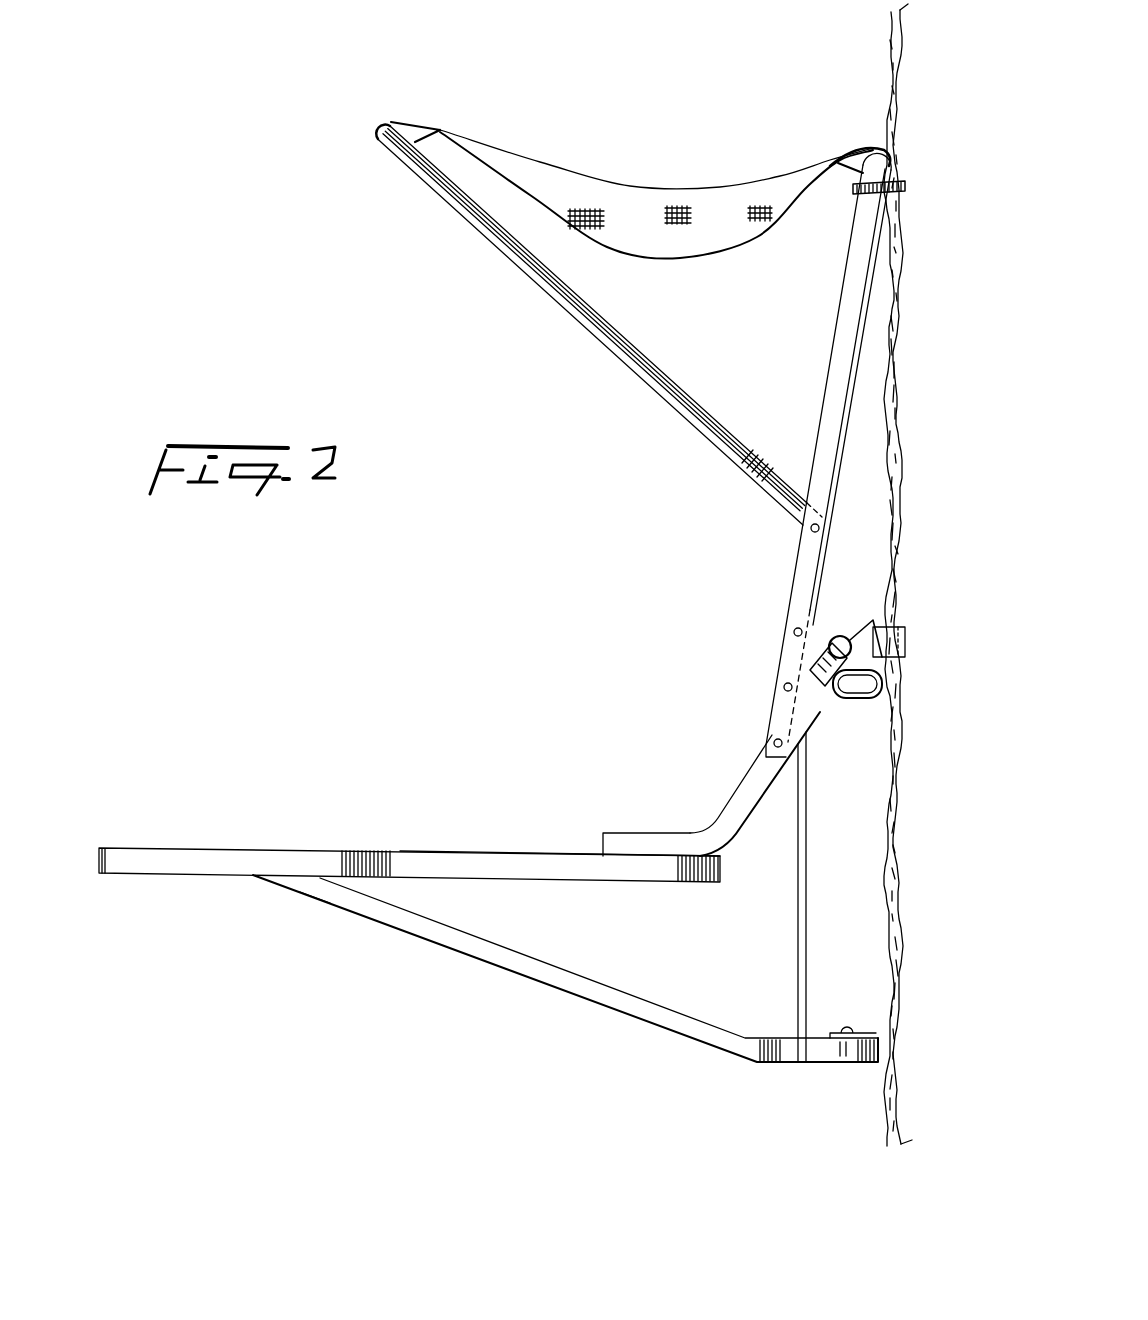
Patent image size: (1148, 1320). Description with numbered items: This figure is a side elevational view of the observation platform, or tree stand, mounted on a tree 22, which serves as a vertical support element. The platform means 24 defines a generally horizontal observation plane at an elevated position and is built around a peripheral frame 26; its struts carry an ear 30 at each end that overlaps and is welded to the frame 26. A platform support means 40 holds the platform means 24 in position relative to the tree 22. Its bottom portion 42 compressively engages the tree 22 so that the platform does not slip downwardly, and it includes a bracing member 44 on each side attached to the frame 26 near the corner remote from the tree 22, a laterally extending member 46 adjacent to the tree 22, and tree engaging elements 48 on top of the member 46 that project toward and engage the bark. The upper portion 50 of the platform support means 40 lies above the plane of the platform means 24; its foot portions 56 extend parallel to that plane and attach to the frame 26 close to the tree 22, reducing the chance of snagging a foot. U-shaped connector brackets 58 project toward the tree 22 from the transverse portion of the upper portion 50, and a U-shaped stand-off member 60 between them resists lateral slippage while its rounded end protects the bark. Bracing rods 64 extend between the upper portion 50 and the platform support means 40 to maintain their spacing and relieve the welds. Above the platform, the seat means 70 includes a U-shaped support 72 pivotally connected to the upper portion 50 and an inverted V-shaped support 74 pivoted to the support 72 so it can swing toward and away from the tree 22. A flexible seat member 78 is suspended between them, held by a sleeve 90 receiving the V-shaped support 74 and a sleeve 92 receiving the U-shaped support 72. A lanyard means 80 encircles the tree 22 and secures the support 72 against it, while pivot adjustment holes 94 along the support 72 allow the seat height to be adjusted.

The tree 22 is at (883, 45).
The platform means 24 is at (168, 876).
The peripheral frame 26 is at (480, 862).
The ear 30 is at (340, 846).
The platform support means 40 is at (490, 963).
The bottom portion 42 is at (402, 939).
The bracing member 44 is at (330, 908).
The laterally extending member 46 is at (768, 1065).
The tree engaging element 48 is at (855, 1064).
The upper portion 50 is at (738, 776).
The foot portion 56 is at (640, 832).
The U-shaped connector bracket 58 is at (830, 640).
The U-shaped stand-off member 60 is at (857, 700).
The bracing rod 64 is at (800, 930).
The seat means 70 is at (580, 326).
The U-shaped support 72 is at (832, 372).
The inverted V-shaped support 74 is at (478, 228).
The flexible seat member 78 is at (621, 200).
The lanyard means 80 is at (866, 200).
The sleeve 90 is at (378, 130).
The sleeve 92 is at (877, 147).
The pivot adjustment hole 94 is at (784, 686).